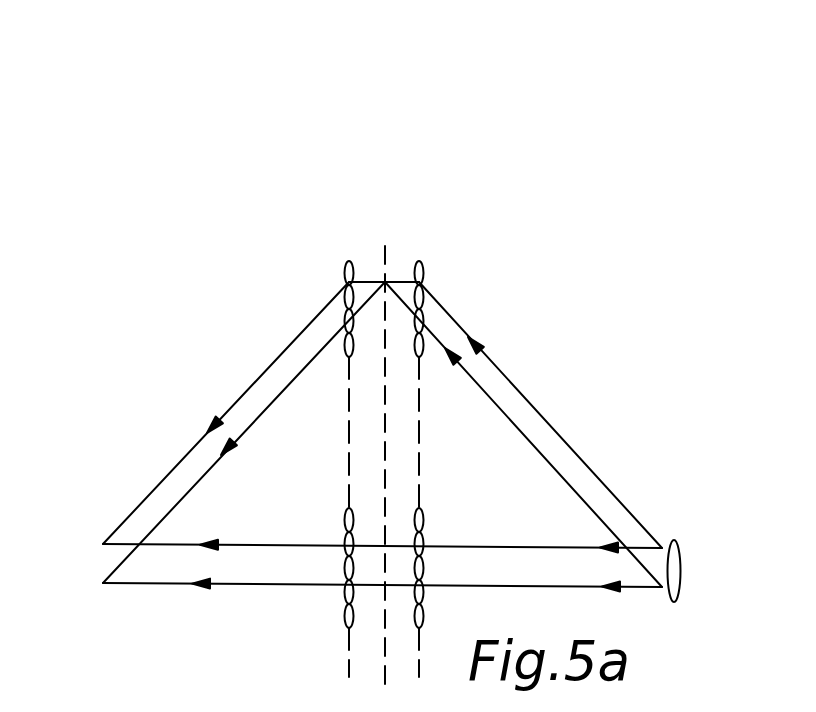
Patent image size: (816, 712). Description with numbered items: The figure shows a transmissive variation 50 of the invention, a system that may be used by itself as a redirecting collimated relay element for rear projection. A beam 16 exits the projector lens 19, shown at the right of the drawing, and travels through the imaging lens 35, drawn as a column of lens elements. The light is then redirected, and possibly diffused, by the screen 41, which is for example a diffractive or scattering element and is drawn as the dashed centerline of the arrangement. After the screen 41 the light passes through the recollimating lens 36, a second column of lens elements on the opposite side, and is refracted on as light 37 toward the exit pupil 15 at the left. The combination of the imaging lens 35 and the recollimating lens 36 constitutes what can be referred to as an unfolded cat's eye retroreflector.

The transmissive variation 50 is at (634, 51).
The screen 41 is at (385, 246).
The recollimating lens 36 is at (347, 262).
The imaging lens 35 is at (425, 268).
The light 37 is at (238, 400).
The beam 16 is at (576, 452).
The exit pupil 15 is at (95, 570).
The projector lens 19 is at (680, 558).